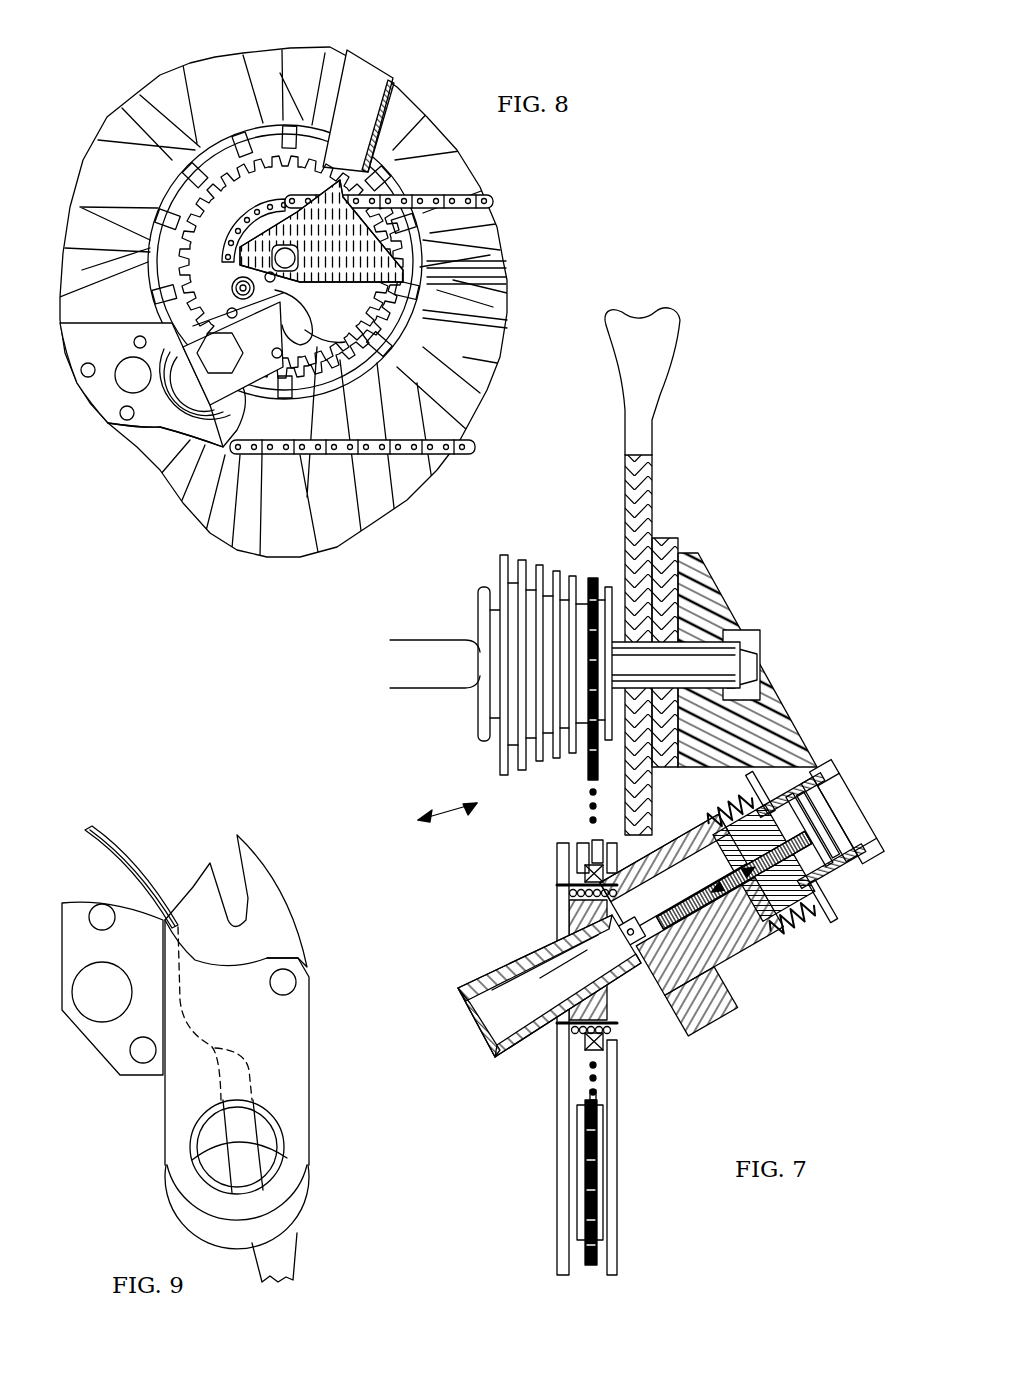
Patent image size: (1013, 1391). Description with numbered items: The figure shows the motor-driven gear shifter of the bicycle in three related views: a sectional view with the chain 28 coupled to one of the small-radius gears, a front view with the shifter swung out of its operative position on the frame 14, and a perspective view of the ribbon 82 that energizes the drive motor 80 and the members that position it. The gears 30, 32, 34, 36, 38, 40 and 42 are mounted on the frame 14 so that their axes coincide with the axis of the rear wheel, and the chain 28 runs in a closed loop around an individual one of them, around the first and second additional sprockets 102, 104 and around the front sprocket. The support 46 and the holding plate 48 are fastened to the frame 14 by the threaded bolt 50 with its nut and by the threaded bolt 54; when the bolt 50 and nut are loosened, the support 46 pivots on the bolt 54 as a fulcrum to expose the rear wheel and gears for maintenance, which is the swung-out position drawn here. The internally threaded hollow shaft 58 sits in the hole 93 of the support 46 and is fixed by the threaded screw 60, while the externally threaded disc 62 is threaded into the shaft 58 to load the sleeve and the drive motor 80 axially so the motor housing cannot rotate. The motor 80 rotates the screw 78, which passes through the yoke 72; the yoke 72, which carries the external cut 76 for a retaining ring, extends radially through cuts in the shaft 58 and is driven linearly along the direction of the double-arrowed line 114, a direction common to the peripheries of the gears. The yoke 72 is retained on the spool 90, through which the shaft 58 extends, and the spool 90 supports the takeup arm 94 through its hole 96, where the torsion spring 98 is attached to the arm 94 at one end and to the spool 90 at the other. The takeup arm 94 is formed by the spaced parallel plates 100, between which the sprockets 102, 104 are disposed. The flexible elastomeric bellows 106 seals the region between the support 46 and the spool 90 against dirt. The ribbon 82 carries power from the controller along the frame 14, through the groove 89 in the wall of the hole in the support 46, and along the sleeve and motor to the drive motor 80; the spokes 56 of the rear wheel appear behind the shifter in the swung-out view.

In FIG. 8, the frame 14 is at (460, 270).
In FIG. 7, the frame 14 is at (655, 358).
In FIG. 8, the chain 28 is at (450, 200).
In FIG. 7, the chain 28 is at (593, 574).
In FIG. 7, the gear 30 is at (609, 584).
In FIG. 7, the gear 32 is at (592, 782).
In FIG. 7, the gear 34 is at (572, 577).
In FIG. 7, the gear 36 is at (556, 770).
In FIG. 7, the gear 38 is at (539, 566).
In FIG. 8, the gear 40 is at (292, 160).
In FIG. 7, the gear 40 is at (521, 772).
In FIG. 8, the gear 42 is at (297, 180).
In FIG. 7, the gear 42 is at (505, 553).
In FIG. 8, the support 46 is at (243, 480).
In FIG. 7, the support 46 is at (744, 610).
In FIG. 9, the support 46 is at (297, 1057).
In FIG. 8, the holding plate 48 is at (333, 360).
In FIG. 7, the holding plate 48 is at (670, 540).
In FIG. 9, the holding plate 48 is at (273, 917).
In FIG. 8, the threaded bolt 50 is at (493, 322).
In FIG. 8, the threaded bolt 54 is at (157, 305).
In FIG. 8, the wheel spokes 56 is at (112, 292).
In FIG. 7, the internally threaded hollow shaft 58 is at (800, 772).
In FIG. 8, the threaded screw 60 is at (160, 428).
In FIG. 7, the threaded screw 60 is at (850, 792).
In FIG. 7, the externally threaded disc 62 is at (822, 905).
In FIG. 7, the yoke 72 is at (717, 922).
In FIG. 7, the external cut 76 is at (722, 822).
In FIG. 7, the screw 78 is at (687, 912).
In FIG. 7, the drive motor 80 is at (528, 1022).
In FIG. 9, the ribbon 82 is at (122, 842).
In FIG. 9, the groove 89 is at (285, 1133).
In FIG. 7, the spool 90 is at (667, 1010).
In FIG. 9, the hole 93 is at (208, 1132).
In FIG. 8, the takeup arm 94 is at (104, 393).
In FIG. 7, the takeup arm 94 is at (555, 870).
In FIG. 9, the takeup arm 94 is at (112, 988).
In FIG. 7, the hole 96 is at (627, 1033).
In FIG. 7, the torsion spring 98 is at (607, 1050).
In FIG. 7, the plates 100 is at (617, 1137).
In FIG. 7, the first additional sprocket 102 is at (555, 835).
In FIG. 7, the second additional sprocket 104 is at (593, 1227).
In FIG. 7, the flexible elastomeric bellows 106 is at (805, 920).
In FIG. 7, the line 114 is at (445, 808).